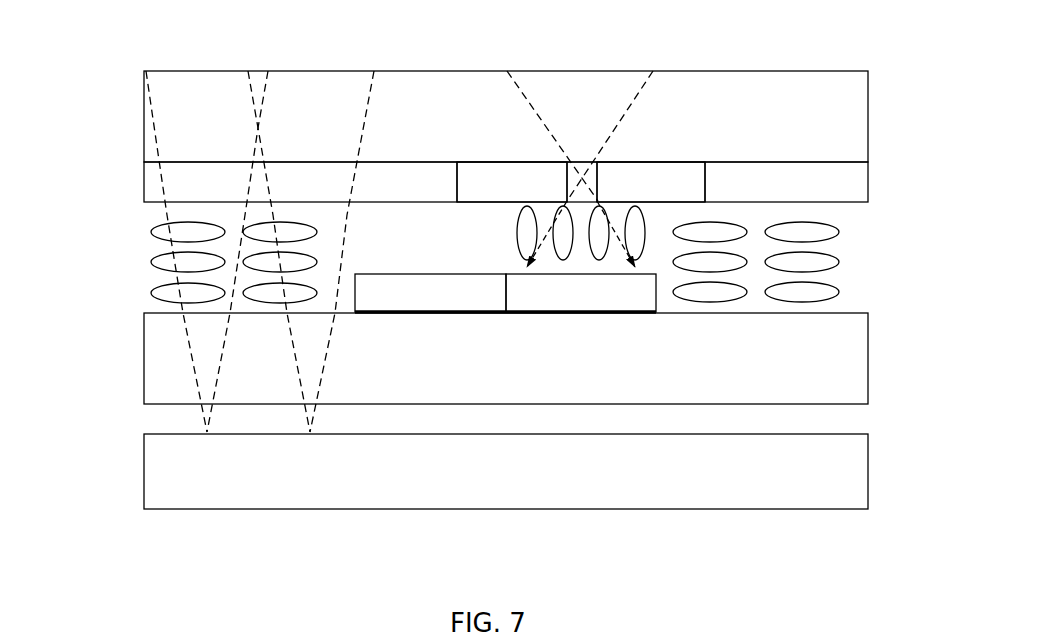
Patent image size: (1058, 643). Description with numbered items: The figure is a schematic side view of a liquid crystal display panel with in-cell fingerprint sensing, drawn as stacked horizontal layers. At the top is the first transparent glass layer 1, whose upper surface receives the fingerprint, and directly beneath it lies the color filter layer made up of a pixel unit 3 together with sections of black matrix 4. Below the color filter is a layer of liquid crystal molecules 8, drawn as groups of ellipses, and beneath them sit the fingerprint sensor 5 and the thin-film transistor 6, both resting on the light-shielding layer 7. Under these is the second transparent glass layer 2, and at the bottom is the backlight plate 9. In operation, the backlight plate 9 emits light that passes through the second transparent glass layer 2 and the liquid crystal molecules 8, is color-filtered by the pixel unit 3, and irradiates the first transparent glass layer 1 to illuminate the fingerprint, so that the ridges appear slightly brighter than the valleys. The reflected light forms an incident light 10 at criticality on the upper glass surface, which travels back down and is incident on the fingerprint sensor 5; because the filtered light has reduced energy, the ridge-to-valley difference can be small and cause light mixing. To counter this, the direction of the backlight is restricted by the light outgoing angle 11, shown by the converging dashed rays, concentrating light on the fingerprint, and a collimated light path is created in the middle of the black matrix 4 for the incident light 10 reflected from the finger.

The first transparent glass layer 1 is at (843, 99).
The second transparent glass layer 2 is at (825, 370).
The pixel unit 3 is at (828, 184).
The black matrix 4 is at (508, 182).
The fingerprint sensor 5 is at (633, 305).
The thin-film transistor 6 is at (437, 295).
The light-shielding layer 7 is at (407, 313).
The liquid crystal molecule 8 is at (823, 261).
The backlight plate 9 is at (812, 480).
The incident light 10 is at (548, 125).
The light outgoing angle 11 is at (203, 413).